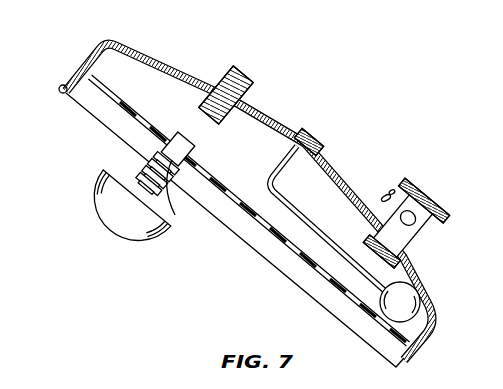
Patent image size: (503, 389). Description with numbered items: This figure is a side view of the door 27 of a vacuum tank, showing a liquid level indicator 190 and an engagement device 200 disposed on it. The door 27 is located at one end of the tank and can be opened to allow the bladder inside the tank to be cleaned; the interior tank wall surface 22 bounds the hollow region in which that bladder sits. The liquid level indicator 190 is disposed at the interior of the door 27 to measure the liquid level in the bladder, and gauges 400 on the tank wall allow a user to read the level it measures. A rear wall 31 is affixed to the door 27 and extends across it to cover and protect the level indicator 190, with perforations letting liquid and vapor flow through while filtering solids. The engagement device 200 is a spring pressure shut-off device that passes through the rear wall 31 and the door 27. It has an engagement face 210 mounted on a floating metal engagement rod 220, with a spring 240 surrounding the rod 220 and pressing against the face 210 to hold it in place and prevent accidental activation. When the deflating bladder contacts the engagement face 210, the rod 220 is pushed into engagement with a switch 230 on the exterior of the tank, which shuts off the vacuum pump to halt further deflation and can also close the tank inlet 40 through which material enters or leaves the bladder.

The interior tank wall surface 22 is at (344, 200).
The door 27 is at (268, 116).
The rear wall 31 is at (337, 292).
The tank inlet 40 is at (428, 195).
The liquid level indicator 190 is at (408, 300).
The engagement device 200 is at (150, 195).
The engagement face 210 is at (112, 237).
The engagement rod 220 is at (198, 146).
The switch 230 is at (240, 73).
The spring 240 is at (168, 177).
The gauges 400 is at (313, 131).